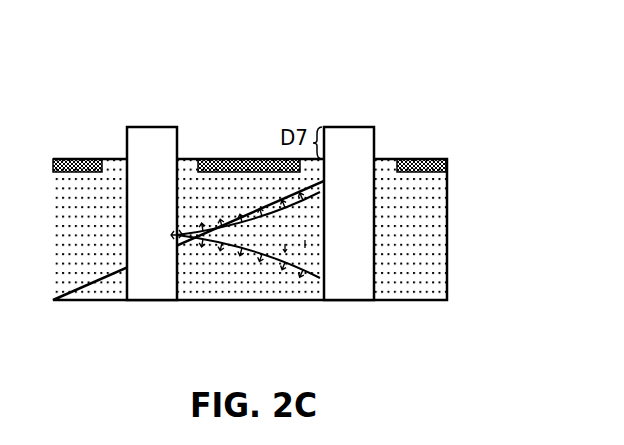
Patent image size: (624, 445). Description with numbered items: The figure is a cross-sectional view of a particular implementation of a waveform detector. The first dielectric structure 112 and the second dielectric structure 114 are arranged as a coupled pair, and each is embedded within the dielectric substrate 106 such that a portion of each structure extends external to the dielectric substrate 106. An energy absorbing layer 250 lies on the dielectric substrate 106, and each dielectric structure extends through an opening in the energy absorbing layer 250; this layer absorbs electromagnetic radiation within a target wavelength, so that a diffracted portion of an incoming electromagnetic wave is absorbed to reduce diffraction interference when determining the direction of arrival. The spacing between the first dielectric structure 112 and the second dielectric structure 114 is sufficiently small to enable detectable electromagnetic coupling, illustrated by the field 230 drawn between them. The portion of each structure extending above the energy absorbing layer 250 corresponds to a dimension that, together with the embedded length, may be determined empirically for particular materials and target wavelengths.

The dielectric substrate 106 is at (242, 287).
The first dielectric structure 112 is at (150, 127).
The second dielectric structure 114 is at (352, 127).
The field 230 is at (293, 205).
The energy absorbing layer 250 is at (94, 158).